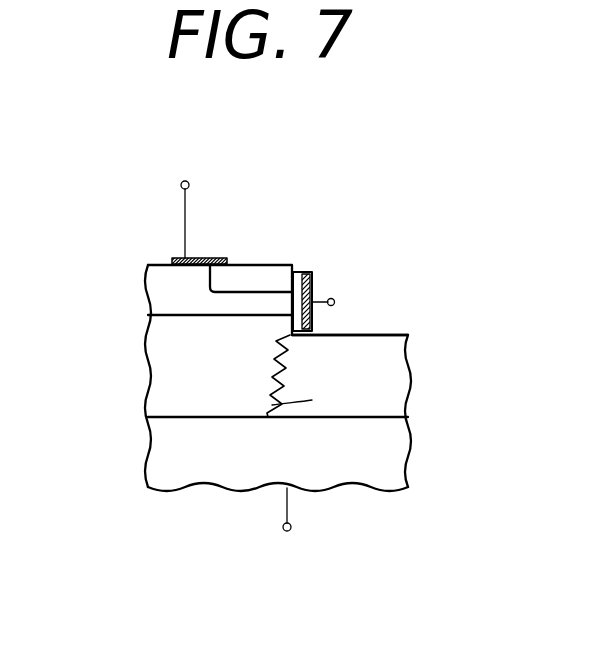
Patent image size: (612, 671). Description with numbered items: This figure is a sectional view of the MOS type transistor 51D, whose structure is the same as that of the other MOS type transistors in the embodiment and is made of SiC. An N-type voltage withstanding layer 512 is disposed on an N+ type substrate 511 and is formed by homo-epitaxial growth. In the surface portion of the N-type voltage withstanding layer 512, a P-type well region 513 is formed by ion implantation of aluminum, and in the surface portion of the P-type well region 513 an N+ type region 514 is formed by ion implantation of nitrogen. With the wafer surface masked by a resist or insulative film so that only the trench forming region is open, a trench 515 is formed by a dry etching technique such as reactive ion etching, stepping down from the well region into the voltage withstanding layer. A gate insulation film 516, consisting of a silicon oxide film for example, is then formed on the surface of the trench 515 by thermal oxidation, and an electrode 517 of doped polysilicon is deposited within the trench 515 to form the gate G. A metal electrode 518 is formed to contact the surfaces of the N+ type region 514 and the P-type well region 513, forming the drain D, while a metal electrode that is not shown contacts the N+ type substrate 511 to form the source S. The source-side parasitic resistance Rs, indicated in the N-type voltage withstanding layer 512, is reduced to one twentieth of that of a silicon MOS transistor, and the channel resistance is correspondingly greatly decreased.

The MOS type transistor 51D is at (332, 198).
The N+ type substrate 511 is at (395, 450).
The N-type voltage withstanding layer 512 is at (393, 388).
The P-type well region 513 is at (163, 303).
The N+ type region 514 is at (265, 270).
The trench 515 is at (387, 332).
The gate insulation film 516 is at (298, 272).
The electrode 517 is at (312, 286).
The metal electrode 518 is at (177, 260).